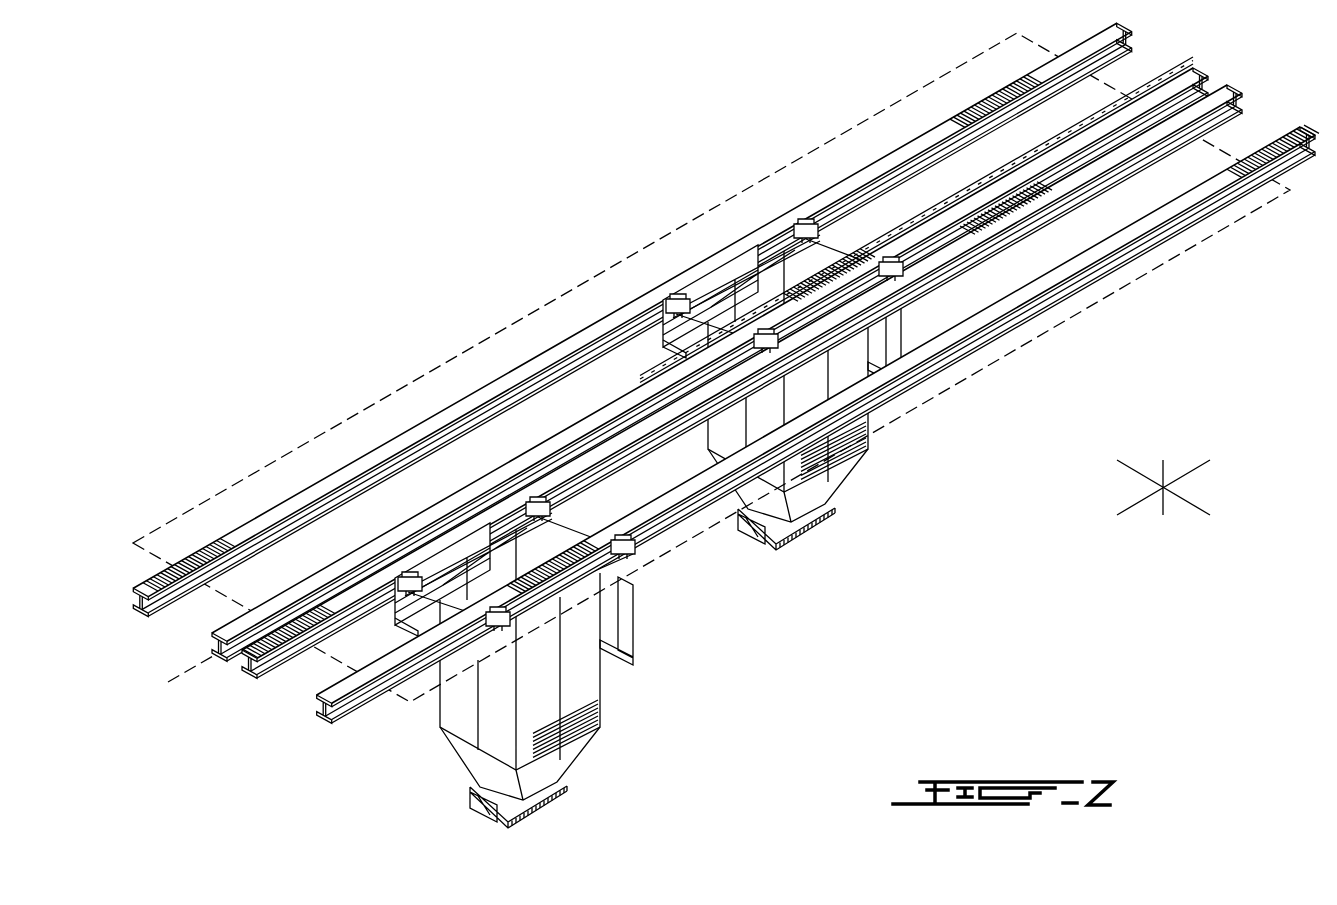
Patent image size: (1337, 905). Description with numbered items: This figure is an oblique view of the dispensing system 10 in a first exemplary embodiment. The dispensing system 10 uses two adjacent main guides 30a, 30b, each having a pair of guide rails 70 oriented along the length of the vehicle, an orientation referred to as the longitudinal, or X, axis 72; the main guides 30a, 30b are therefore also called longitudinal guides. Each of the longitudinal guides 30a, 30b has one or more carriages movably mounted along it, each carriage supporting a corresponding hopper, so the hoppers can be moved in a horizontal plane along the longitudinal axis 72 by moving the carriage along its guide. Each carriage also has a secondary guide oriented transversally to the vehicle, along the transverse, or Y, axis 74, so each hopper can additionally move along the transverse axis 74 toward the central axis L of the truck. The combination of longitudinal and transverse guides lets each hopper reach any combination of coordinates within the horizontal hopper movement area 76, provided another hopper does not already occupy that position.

The dispensing system 10 is at (665, 168).
The main guide 30a is at (1295, 130).
The main guide 30b is at (1172, 83).
The guide rails 70 is at (1183, 200).
The longitudinal axis 72 is at (1193, 472).
The transverse axis 74 is at (1130, 468).
The horizontal hopper movement area 76 is at (407, 387).
The central axis L is at (640, 412).